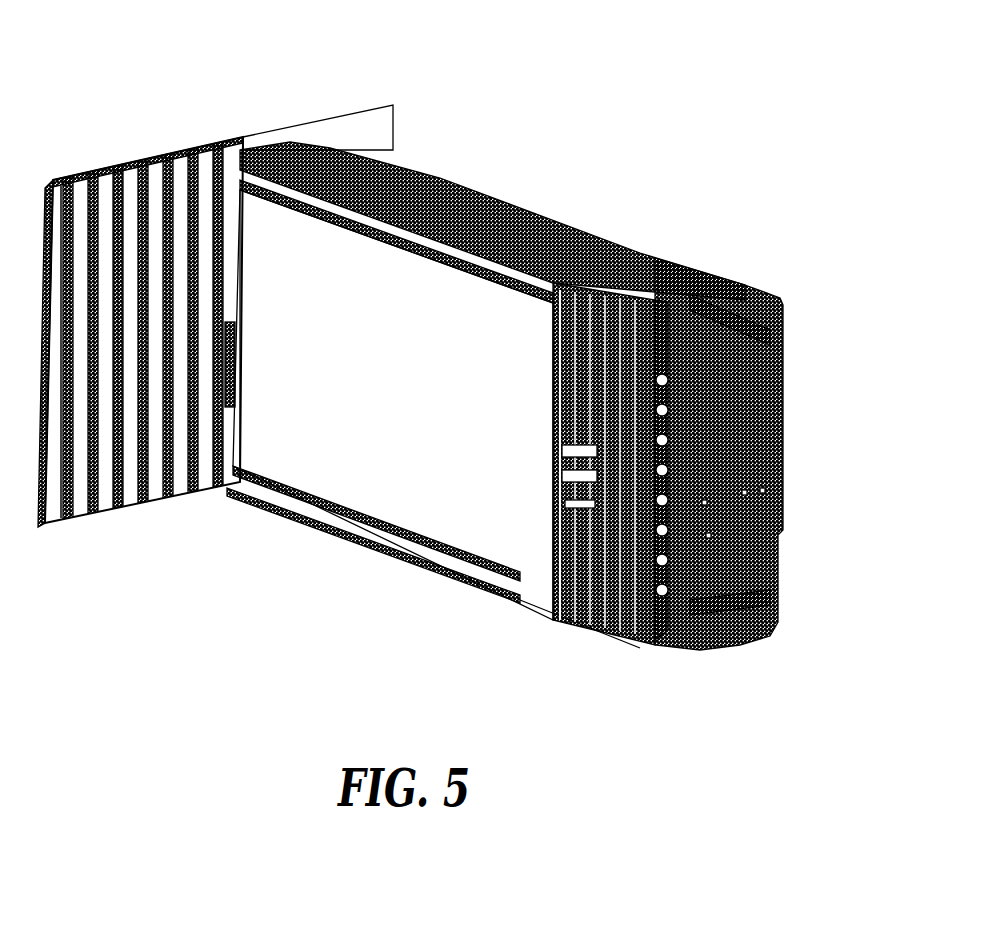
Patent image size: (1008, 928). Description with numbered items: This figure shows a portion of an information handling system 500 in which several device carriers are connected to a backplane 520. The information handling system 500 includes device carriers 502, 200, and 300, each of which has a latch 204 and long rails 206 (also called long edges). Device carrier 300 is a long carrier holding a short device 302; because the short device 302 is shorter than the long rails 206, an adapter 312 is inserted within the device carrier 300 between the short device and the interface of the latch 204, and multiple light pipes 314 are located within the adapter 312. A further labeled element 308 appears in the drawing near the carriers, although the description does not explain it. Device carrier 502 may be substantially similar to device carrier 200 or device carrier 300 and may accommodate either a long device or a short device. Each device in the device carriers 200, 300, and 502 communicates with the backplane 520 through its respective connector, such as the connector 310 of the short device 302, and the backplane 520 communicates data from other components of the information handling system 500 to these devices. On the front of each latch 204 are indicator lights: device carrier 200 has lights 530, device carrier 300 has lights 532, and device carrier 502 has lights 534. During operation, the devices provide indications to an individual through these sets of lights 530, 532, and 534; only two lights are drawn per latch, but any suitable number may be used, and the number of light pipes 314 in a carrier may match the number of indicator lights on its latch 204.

The information handling system 500 is at (568, 96).
The backplane 520 is at (138, 194).
The device carrier 200 is at (392, 182).
The long rails 206 is at (434, 227).
The connector panel 308 is at (656, 378).
The device carrier 502 is at (670, 248).
The latch 204 is at (697, 313).
The lights 530 is at (740, 525).
The lights 534 is at (773, 493).
The lights 532 is at (705, 503).
The light pipes 314 is at (598, 462).
The adapter 312 is at (560, 420).
The device carrier 300 is at (559, 397).
The short device 302 is at (393, 503).
The connector 310 is at (228, 382).